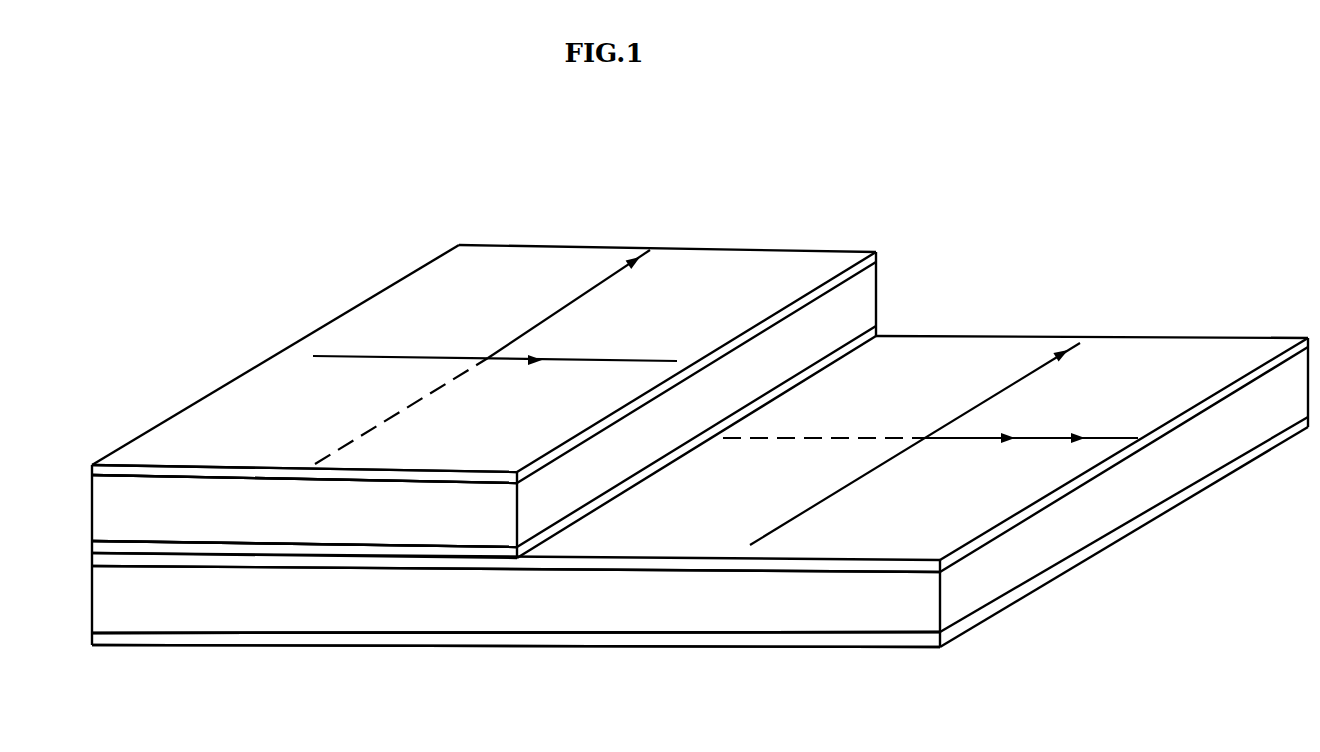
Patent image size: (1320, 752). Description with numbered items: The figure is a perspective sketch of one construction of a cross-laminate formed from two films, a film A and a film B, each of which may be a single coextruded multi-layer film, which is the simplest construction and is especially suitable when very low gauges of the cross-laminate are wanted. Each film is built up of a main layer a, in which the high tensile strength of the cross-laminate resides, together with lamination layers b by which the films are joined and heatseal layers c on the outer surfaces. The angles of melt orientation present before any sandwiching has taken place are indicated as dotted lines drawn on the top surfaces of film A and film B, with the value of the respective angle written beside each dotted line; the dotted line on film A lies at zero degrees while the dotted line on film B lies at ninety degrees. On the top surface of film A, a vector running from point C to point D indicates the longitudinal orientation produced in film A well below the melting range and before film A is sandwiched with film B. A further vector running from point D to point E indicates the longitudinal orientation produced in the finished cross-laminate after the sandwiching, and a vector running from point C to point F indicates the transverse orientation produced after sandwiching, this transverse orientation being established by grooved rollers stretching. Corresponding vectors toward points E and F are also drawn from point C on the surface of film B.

The film A is at (700, 491).
The film B is at (484, 401).
The main layer a is at (104, 511).
The lamination layer b is at (110, 549).
The heatseal layer c is at (92, 468).
The point C is at (617, 401).
The point D is at (979, 427).
The point E is at (725, 386).
The point F is at (796, 397).